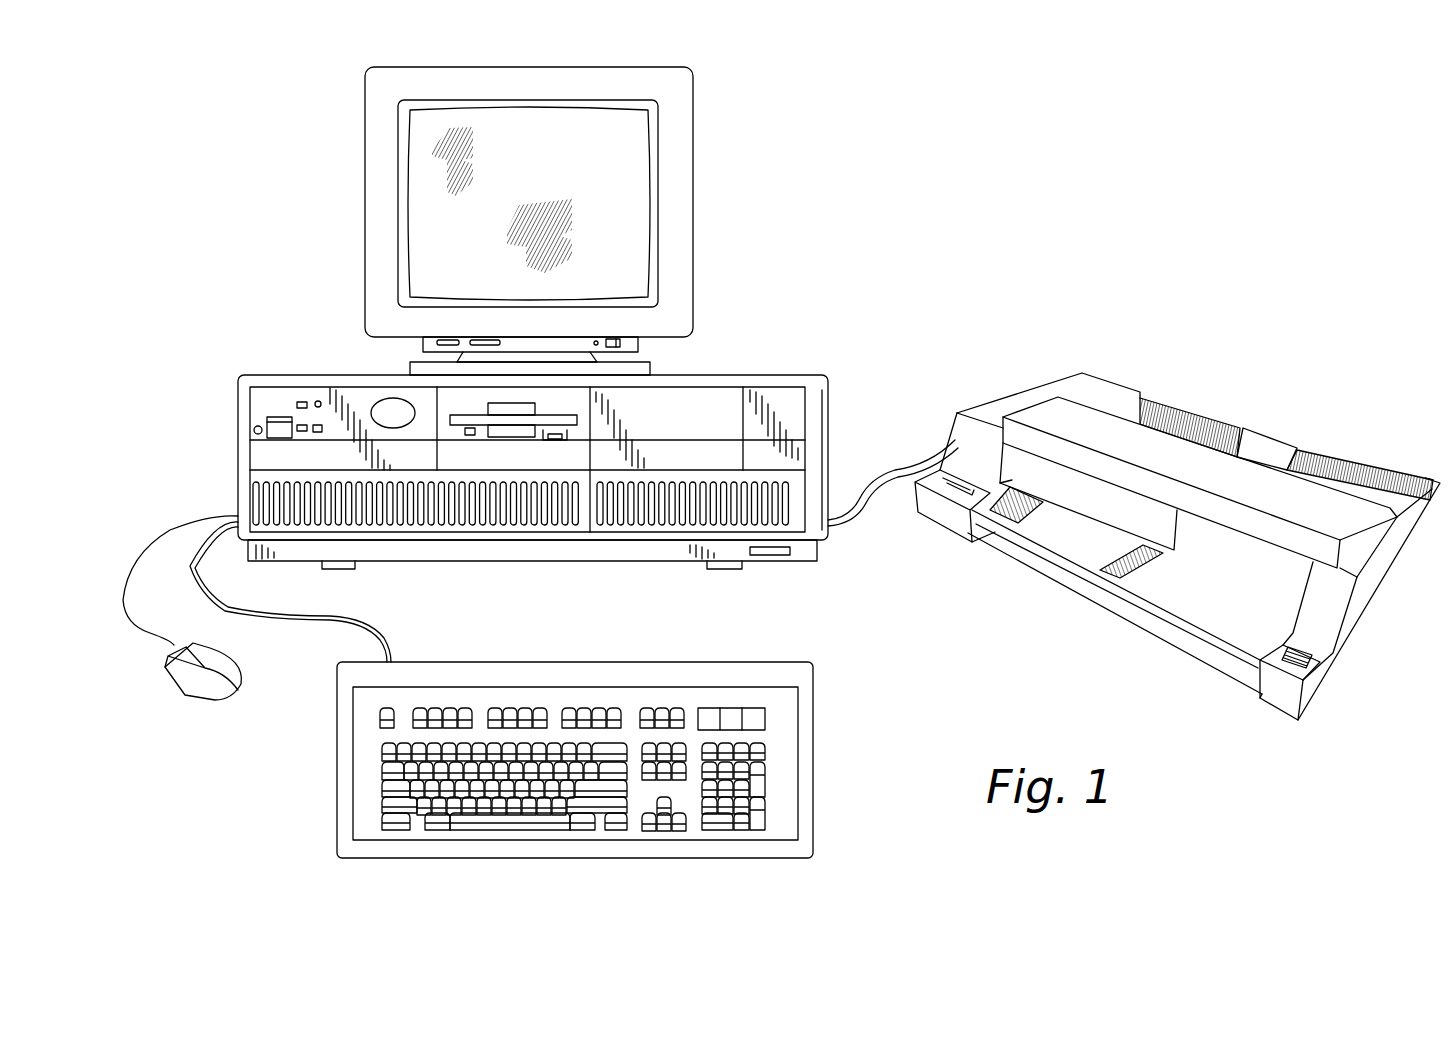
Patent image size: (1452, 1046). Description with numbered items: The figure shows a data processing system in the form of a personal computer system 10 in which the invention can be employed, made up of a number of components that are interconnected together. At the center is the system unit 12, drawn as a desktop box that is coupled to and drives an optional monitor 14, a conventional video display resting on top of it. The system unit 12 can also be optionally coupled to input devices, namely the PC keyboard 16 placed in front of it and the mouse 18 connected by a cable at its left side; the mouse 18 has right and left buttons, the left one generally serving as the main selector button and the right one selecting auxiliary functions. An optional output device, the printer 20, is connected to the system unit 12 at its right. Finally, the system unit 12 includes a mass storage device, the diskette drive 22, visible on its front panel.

The personal computer system 10 is at (908, 189).
The system unit 12 is at (752, 372).
The monitor 14 is at (698, 236).
The PC keyboard 16 is at (688, 660).
The mouse 18 is at (182, 680).
The printer 20 is at (1017, 385).
The diskette drive 22 is at (521, 428).